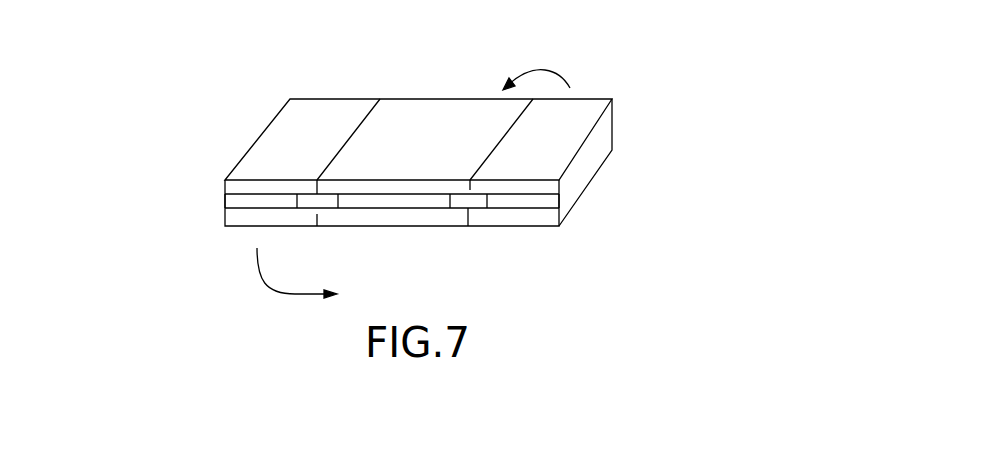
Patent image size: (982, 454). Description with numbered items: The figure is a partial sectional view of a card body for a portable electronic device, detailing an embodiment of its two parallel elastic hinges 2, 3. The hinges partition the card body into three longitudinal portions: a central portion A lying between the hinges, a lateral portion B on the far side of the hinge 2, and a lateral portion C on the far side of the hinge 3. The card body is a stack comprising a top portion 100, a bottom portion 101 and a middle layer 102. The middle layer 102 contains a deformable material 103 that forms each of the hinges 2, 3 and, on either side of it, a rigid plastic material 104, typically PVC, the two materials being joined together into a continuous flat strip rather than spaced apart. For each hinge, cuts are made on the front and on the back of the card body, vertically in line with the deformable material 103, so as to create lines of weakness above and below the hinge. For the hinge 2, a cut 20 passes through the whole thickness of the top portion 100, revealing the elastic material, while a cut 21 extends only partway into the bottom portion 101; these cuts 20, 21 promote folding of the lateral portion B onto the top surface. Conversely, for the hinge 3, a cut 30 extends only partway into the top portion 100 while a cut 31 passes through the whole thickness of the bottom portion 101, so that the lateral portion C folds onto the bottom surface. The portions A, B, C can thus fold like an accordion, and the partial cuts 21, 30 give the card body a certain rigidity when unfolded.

The top portion 100 is at (545, 187).
The bottom portion 101 is at (545, 217).
The middle layer 102 is at (240, 205).
The deformable material 103 is at (315, 203).
The rigid plastic material 104 is at (238, 194).
The cut 20 is at (337, 162).
The cut 30 is at (482, 165).
The elastic hinge 2 is at (316, 226).
The cut 21 is at (318, 220).
The cut 31 is at (467, 212).
The elastic hinge 3 is at (468, 228).
The central portion A is at (441, 110).
The lateral portion B is at (322, 118).
The lateral portion C is at (563, 115).